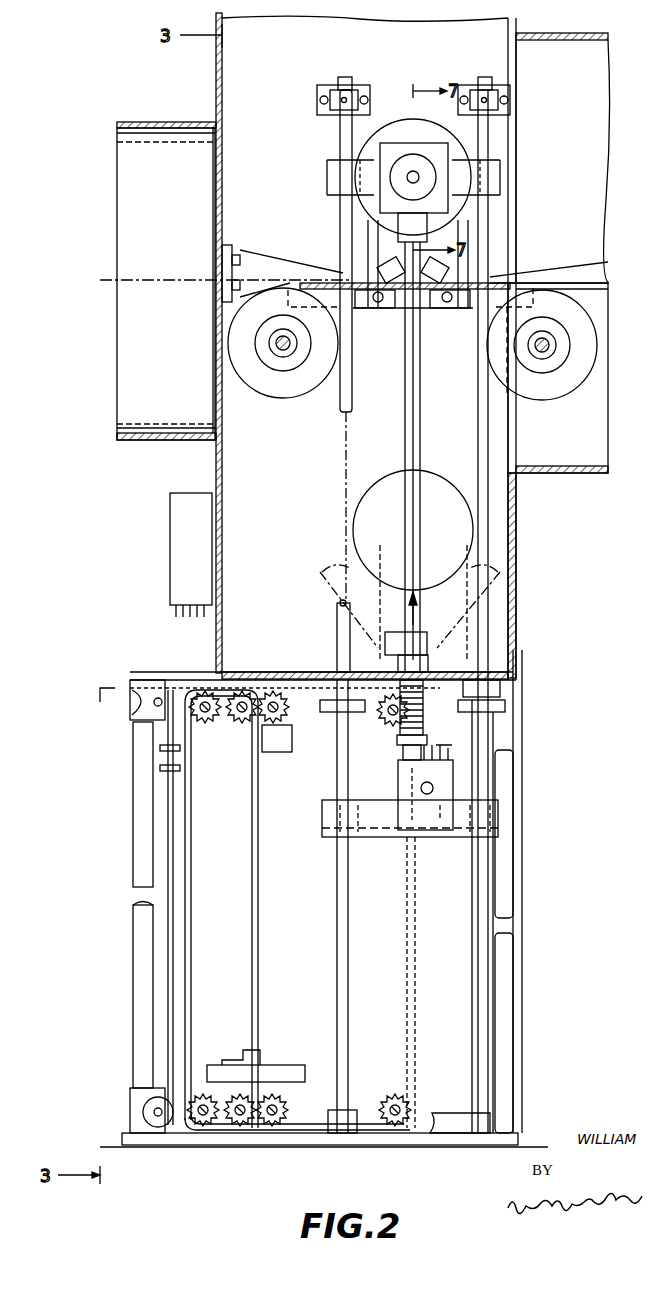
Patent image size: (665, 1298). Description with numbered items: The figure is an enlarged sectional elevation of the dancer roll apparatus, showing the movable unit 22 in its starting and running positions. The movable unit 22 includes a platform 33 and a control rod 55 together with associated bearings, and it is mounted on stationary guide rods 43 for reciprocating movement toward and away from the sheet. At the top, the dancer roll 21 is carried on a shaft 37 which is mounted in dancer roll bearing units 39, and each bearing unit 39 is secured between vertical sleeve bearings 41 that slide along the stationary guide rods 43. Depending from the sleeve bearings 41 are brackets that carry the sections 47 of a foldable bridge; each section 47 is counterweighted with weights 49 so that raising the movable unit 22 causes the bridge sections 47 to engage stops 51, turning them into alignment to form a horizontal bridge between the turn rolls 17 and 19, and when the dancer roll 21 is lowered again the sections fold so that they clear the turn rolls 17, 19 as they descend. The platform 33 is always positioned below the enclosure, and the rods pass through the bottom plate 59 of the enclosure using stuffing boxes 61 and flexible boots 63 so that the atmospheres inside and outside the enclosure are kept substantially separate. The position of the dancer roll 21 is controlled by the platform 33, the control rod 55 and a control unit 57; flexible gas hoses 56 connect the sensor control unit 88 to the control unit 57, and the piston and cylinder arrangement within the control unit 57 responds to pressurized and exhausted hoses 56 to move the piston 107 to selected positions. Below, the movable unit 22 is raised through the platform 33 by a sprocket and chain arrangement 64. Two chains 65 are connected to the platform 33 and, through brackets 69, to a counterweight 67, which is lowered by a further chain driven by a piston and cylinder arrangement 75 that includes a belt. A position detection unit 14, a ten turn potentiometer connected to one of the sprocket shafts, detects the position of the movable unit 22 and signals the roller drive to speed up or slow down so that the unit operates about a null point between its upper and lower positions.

The position detection unit 14 is at (285, 753).
The turn roll 17 is at (585, 318).
The turn roll 19 is at (260, 393).
The dancer roll 21 is at (385, 165).
The movable unit 22 is at (302, 592).
The platform 33 is at (386, 838).
The shaft 37 is at (413, 177).
The dancer roll bearing unit 39 is at (385, 203).
The vertical sleeve bearing 41 is at (327, 171).
The stationary guide rod 43 is at (490, 132).
The bridge section 47 is at (368, 308).
The weight 49 is at (430, 298).
The stop 51 is at (545, 272).
The control rod 55 is at (408, 378).
The flexible gas hose 56 is at (172, 612).
The control unit 57 is at (459, 795).
The bottom plate 59 is at (335, 668).
The stuffing box 61 is at (500, 695).
The flexible boot 63 is at (400, 737).
The sprocket and chain arrangement 64 is at (418, 1024).
The chain 65 is at (262, 996).
The counterweight 67 is at (293, 1068).
The bracket 69 is at (230, 1060).
The piston and cylinder arrangement 75 is at (132, 812).
The sensor control unit 88 is at (186, 500).
The piston 107 is at (421, 788).